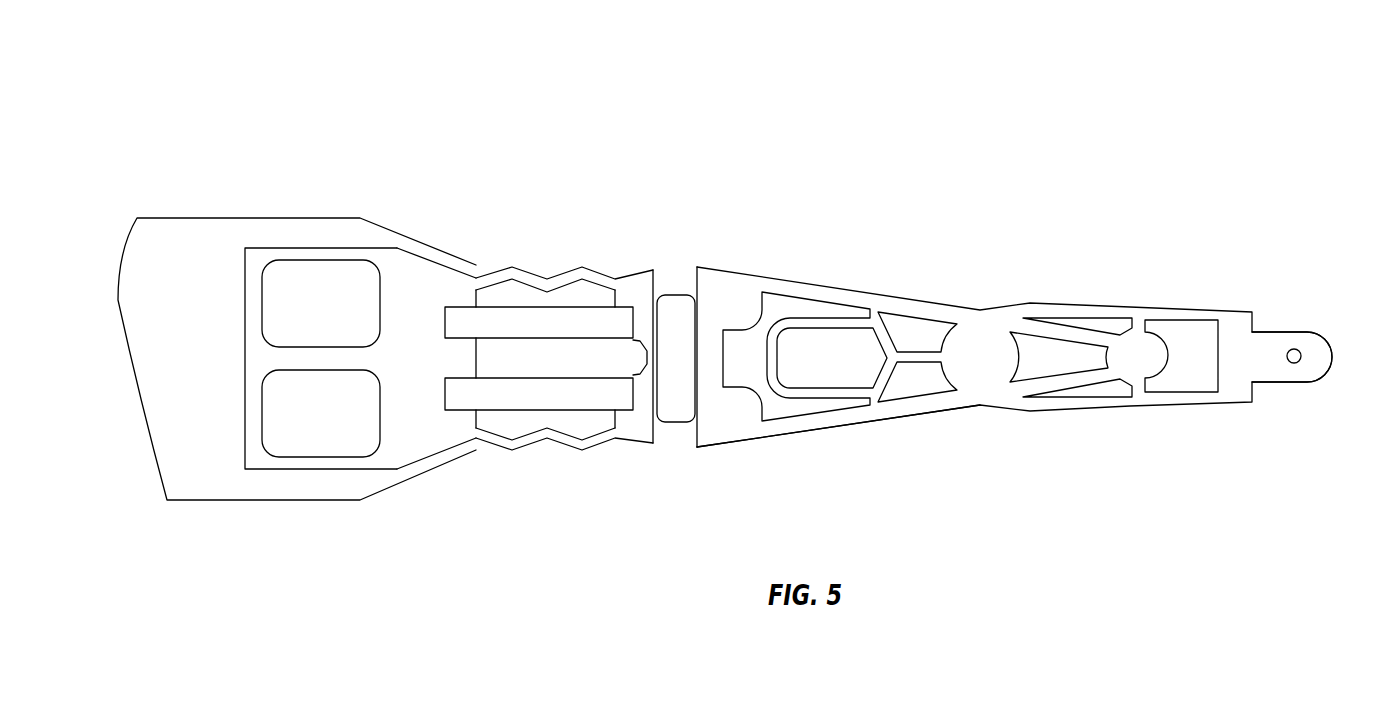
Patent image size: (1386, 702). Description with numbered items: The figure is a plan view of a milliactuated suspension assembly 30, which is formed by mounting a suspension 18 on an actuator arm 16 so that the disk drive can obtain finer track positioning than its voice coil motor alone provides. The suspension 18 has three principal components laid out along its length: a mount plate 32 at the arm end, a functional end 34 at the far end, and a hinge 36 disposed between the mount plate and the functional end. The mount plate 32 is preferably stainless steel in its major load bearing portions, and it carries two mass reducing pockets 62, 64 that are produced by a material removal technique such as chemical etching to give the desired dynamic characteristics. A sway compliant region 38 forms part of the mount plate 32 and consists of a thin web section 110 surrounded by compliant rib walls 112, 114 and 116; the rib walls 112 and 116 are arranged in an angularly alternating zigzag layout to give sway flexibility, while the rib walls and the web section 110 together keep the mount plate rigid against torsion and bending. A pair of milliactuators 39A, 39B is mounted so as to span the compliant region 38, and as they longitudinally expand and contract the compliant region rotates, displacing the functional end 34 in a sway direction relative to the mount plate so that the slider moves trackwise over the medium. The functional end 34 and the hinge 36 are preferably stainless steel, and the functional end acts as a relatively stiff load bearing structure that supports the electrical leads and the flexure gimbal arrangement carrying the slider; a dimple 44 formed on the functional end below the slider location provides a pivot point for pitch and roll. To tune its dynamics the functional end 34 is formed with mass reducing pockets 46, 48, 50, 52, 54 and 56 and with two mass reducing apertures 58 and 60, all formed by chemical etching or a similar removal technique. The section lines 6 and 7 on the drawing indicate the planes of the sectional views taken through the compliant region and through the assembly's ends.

The milliactuated suspension assembly 30 is at (216, 88).
The actuator arm 16 is at (197, 215).
The suspension 18 is at (1029, 324).
The mount plate 32 is at (355, 478).
The functional end 34 is at (852, 422).
The hinge 36 is at (687, 268).
The sway compliant region 38 is at (569, 349).
The milliactuator 39A is at (519, 335).
The milliactuator 39B is at (519, 405).
The dimple 44 is at (1295, 348).
The mass reducing pocket 46 is at (787, 302).
The mass reducing pocket 48 is at (927, 320).
The mass reducing pocket 50 is at (925, 393).
The mass reducing pocket 52 is at (1050, 362).
The mass reducing pocket 54 is at (1112, 322).
The mass reducing pocket 56 is at (1112, 392).
The mass reducing aperture 58 is at (847, 340).
The mass reducing aperture 60 is at (1215, 360).
The mass reducing pocket 62 is at (275, 258).
The mass reducing pocket 64 is at (275, 460).
The web section 110 is at (589, 369).
The compliant rib wall 112 is at (520, 272).
The compliant rib wall 114 is at (520, 443).
The compliant rib wall 116 is at (650, 318).
The section line 6- 6 is at (476, 502).
The section line 7- 7 is at (127, 358).